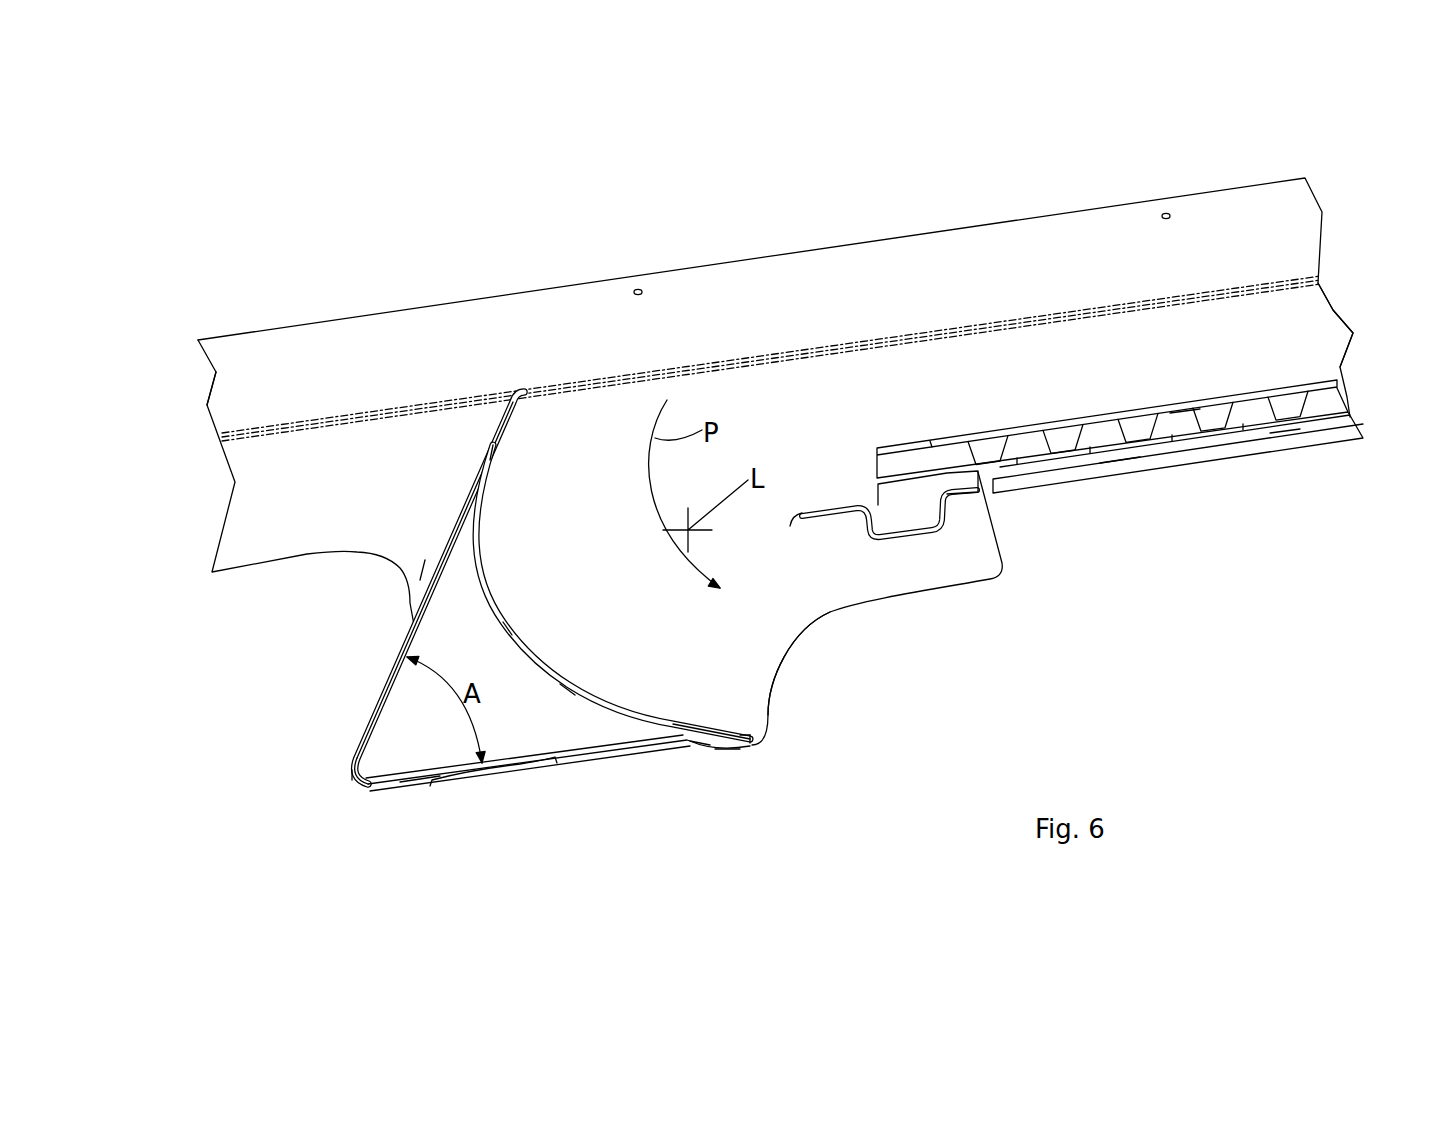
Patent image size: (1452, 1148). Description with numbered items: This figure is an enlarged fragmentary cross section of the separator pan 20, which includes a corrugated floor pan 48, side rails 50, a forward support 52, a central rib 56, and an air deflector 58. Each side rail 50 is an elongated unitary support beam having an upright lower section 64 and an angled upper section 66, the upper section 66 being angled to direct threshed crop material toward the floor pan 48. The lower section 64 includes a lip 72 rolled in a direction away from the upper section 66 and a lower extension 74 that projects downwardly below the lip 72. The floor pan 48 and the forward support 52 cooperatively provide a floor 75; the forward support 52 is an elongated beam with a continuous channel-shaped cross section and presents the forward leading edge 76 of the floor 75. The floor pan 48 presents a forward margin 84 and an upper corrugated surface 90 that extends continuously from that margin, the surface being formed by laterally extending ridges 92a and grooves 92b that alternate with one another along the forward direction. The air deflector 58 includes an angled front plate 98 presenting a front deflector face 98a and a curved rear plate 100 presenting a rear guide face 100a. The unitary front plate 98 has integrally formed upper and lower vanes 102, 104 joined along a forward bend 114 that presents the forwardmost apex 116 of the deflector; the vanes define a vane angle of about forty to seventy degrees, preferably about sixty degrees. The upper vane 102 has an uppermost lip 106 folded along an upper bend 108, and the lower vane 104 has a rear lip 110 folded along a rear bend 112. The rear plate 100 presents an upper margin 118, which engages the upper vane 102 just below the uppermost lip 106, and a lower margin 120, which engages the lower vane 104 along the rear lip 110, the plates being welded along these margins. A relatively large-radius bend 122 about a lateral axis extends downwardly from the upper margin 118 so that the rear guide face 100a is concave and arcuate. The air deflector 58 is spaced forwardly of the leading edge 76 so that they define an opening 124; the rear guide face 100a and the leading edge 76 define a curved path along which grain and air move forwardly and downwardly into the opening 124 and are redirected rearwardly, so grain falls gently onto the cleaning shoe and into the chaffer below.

The separator pan 20 is at (340, 243).
The corrugated floor pan 48 is at (1200, 433).
The side rails 50 is at (1062, 268).
The forward support 52 is at (927, 533).
The central rib 56 is at (1183, 413).
The air deflector 58 is at (568, 688).
The lower section 64 is at (265, 522).
The upper section 66 is at (342, 357).
The lip 72 is at (1117, 470).
The lower extension 74 is at (790, 540).
The floor 75 is at (1287, 433).
The forward leading edge 76 is at (750, 643).
The forward margin 84 is at (845, 505).
The upper corrugated surface 90 is at (1335, 355).
The ridges 92a is at (890, 470).
The grooves 92b is at (940, 468).
The front plate 98 is at (470, 778).
The front deflector face 98a is at (554, 768).
The rear plate 100 is at (487, 556).
The rear guide face 100a is at (655, 717).
The upper vane 102 is at (430, 570).
The lower vane 104 is at (433, 781).
The uppermost lip 106 is at (518, 397).
The upper bend 108 is at (507, 397).
The rear lip 110 is at (728, 751).
The rear bend 112 is at (700, 742).
The forward bend 114 is at (361, 791).
The forwardmost apex 116 is at (347, 782).
The upper margin 118 is at (490, 445).
The lower margin 120 is at (740, 733).
The bend 122 is at (522, 638).
The opening 124 is at (687, 348).